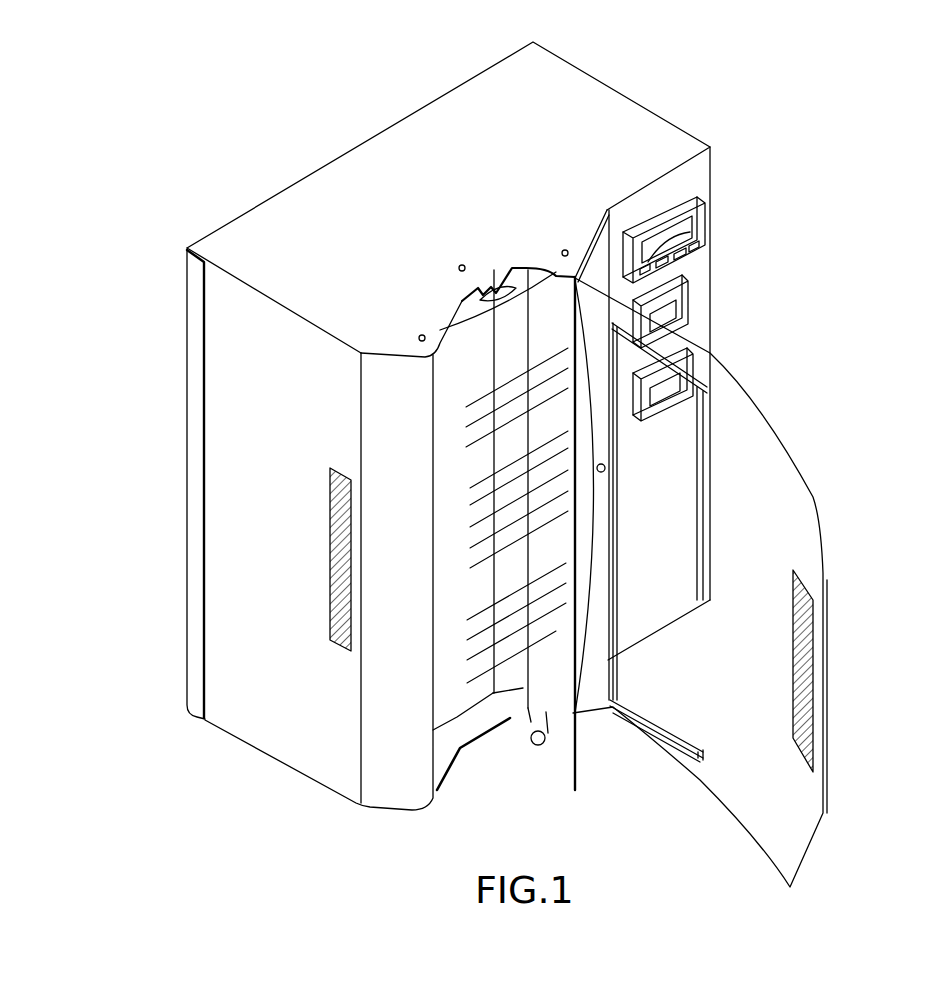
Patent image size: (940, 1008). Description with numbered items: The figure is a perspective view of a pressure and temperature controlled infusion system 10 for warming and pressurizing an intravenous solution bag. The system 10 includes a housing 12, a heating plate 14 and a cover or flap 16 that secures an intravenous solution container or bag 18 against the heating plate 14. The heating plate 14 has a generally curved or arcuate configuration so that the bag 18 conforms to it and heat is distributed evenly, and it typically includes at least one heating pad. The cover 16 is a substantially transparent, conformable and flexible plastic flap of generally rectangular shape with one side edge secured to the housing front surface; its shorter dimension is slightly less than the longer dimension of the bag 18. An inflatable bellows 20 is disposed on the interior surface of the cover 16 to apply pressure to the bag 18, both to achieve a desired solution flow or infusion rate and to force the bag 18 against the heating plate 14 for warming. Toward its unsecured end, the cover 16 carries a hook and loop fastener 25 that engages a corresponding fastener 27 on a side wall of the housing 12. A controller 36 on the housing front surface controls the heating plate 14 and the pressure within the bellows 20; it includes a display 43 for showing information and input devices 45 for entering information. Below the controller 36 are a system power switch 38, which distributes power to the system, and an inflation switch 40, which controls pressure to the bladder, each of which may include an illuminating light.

The pressure and temperature controlled infusion system 10 is at (678, 90).
The housing 12 is at (343, 128).
The heating plate 14 is at (450, 765).
The cover 16 is at (802, 527).
The intravenous solution container or bag 18 is at (480, 622).
The inflatable bellows 20 is at (670, 672).
The hook and loop fastener 25 is at (803, 653).
The fastener 27 is at (340, 590).
The controller 36 is at (703, 195).
The system power switch 38 is at (683, 300).
The inflation switch 40 is at (690, 362).
The display 43 is at (688, 224).
The input devices 45 is at (692, 242).